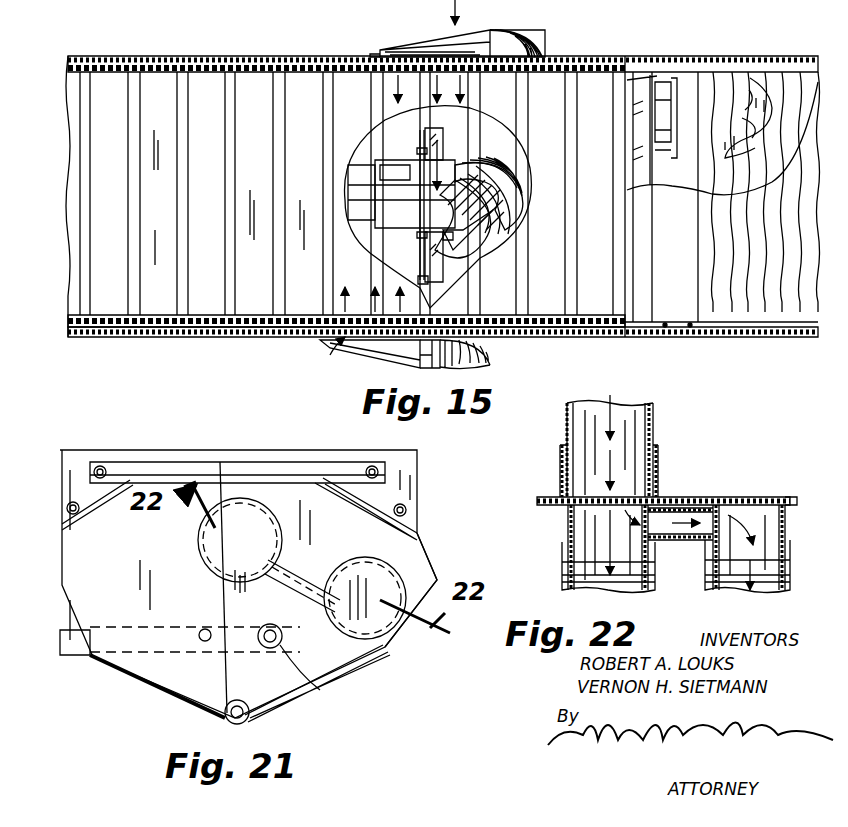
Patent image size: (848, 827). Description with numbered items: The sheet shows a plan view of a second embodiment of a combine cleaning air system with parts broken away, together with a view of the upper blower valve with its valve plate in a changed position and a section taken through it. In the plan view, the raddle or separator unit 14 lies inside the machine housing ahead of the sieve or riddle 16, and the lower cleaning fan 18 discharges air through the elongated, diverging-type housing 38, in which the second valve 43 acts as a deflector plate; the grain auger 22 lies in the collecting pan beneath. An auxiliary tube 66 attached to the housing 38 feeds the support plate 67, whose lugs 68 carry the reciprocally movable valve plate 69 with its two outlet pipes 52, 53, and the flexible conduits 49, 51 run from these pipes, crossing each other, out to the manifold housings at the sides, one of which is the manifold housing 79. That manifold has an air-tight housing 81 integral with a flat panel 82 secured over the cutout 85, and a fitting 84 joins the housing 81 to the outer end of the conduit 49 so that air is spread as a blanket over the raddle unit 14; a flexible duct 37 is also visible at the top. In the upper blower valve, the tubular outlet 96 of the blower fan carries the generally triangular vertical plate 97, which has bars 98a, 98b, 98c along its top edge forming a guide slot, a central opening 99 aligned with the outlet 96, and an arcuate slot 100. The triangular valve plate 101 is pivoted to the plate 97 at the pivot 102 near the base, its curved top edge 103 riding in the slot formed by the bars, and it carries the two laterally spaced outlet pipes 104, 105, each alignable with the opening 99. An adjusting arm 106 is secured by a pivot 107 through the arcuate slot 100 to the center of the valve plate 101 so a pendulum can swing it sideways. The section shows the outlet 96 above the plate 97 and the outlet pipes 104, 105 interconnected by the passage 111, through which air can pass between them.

In FIG. 15, the raddle or separator unit 14 is at (562, 94).
In FIG. 15, the sieve or riddle 16 is at (796, 310).
In FIG. 15, the lower cleaning fan 18 is at (344, 232).
In FIG. 15, the grain auger 22 is at (752, 88).
In FIG. 15, the flexible duct 37 is at (505, 52).
In FIG. 15, the diverging-type housing 38 is at (634, 95).
In FIG. 15, the second valve 43 is at (672, 90).
In FIG. 15, the flexible conduit 49 is at (480, 343).
In FIG. 22, the flexible conduit 49 is at (562, 585).
In FIG. 15, the flexible conduit 51 is at (498, 180).
In FIG. 22, the flexible conduit 51 is at (800, 585).
In FIG. 15, the outlet pipe 52 is at (440, 166).
In FIG. 15, the outlet pipe 53 is at (420, 250).
In FIG. 15, the auxiliary tube 66 is at (378, 156).
In FIG. 15, the support plate 67 is at (390, 182).
In FIG. 15, the lugs 68 is at (448, 238).
In FIG. 15, the valve plate 69 is at (425, 138).
In FIG. 15, the manifold housing 79 is at (350, 348).
In FIG. 15, the air-tight housing 81 is at (422, 47).
In FIG. 15, the flat panel 82 is at (370, 44).
In FIG. 15, the fitting 84 is at (428, 362).
In FIG. 15, the cutout 85 is at (410, 54).
In FIG. 22, the tubular outlet 96 is at (653, 429).
In FIG. 21, the vertical plate 97 is at (82, 603).
In FIG. 22, the vertical plate 97 is at (723, 496).
In FIG. 21, the bar 98a is at (83, 498).
In FIG. 21, the bar 98b is at (150, 473).
In FIG. 21, the bar 98c is at (383, 498).
In FIG. 21, the opening 99 is at (198, 584).
In FIG. 22, the opening 99 is at (660, 470).
In FIG. 21, the arcuate slot 100 is at (193, 679).
In FIG. 21, the valve plate 101 is at (270, 708).
In FIG. 21, the pivot 102 is at (225, 715).
In FIG. 21, the curved top edge 103 is at (413, 542).
In FIG. 22, the curved top edge 103 is at (795, 507).
In FIG. 21, the outlet pipe 104 is at (400, 575).
In FIG. 22, the outlet pipe 104 is at (786, 543).
In FIG. 21, the outlet pipe 105 is at (272, 522).
In FIG. 22, the outlet pipe 105 is at (568, 532).
In FIG. 21, the adjusting arm 106 is at (86, 653).
In FIG. 21, the pivot 107 is at (313, 680).
In FIG. 21, the passage 111 is at (315, 570).
In FIG. 22, the passage 111 is at (688, 550).